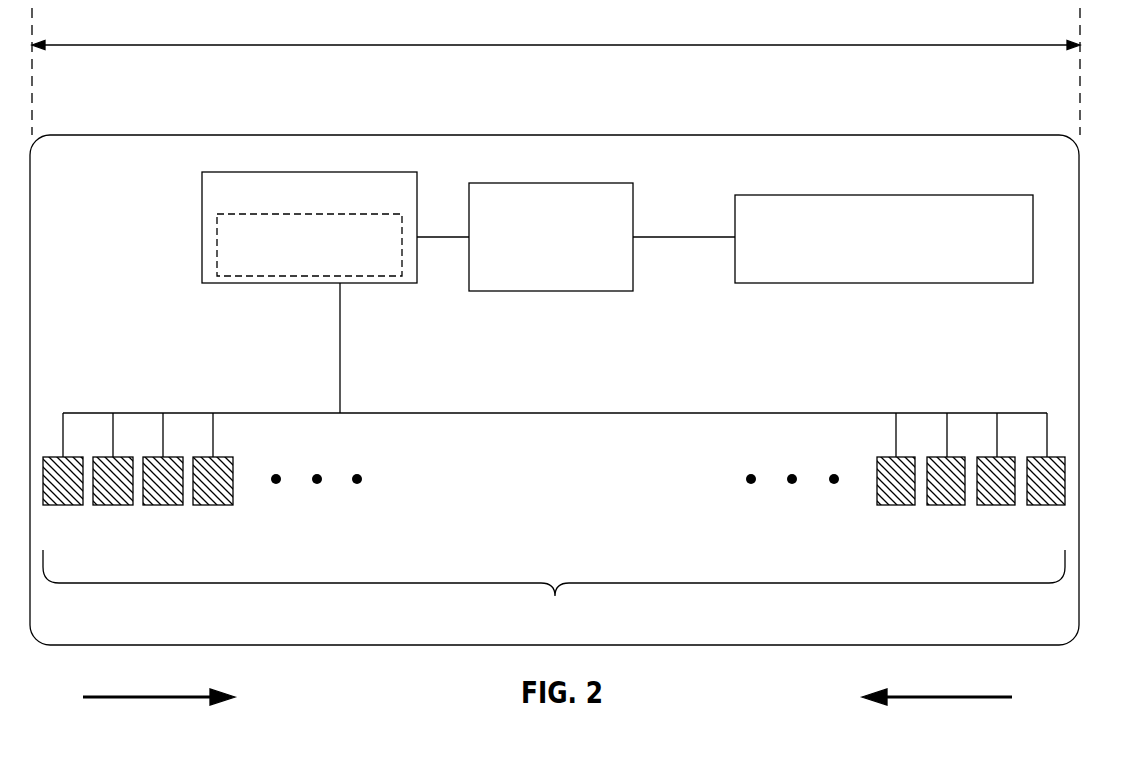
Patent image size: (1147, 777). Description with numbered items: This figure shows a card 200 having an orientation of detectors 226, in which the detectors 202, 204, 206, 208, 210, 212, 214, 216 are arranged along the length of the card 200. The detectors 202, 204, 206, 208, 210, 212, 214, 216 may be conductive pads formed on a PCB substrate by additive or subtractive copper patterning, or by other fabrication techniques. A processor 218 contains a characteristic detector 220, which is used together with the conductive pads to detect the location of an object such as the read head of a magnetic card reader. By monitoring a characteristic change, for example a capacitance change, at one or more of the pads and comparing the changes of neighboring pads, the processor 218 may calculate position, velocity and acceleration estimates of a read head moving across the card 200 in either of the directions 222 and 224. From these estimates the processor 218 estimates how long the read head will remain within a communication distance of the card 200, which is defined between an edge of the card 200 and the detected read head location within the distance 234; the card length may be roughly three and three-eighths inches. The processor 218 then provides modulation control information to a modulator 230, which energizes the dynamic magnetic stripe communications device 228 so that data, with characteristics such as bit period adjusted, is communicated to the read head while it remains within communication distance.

The card 200 is at (1108, 344).
The detector 202 is at (46, 506).
The detector 204 is at (96, 506).
The detector 206 is at (146, 506).
The detector 208 is at (196, 506).
The detector 210 is at (1030, 506).
The detector 212 is at (980, 506).
The detector 214 is at (930, 506).
The detector 216 is at (880, 506).
The processor 218 is at (443, 161).
The characteristic detector 220 is at (332, 214).
The direction 222 is at (127, 699).
The direction 224 is at (968, 699).
The orientation of detectors 226 is at (554, 585).
The dynamic magnetic stripe communications device 228 is at (735, 213).
The modulator 230 is at (656, 172).
The distance 234 is at (512, 44).